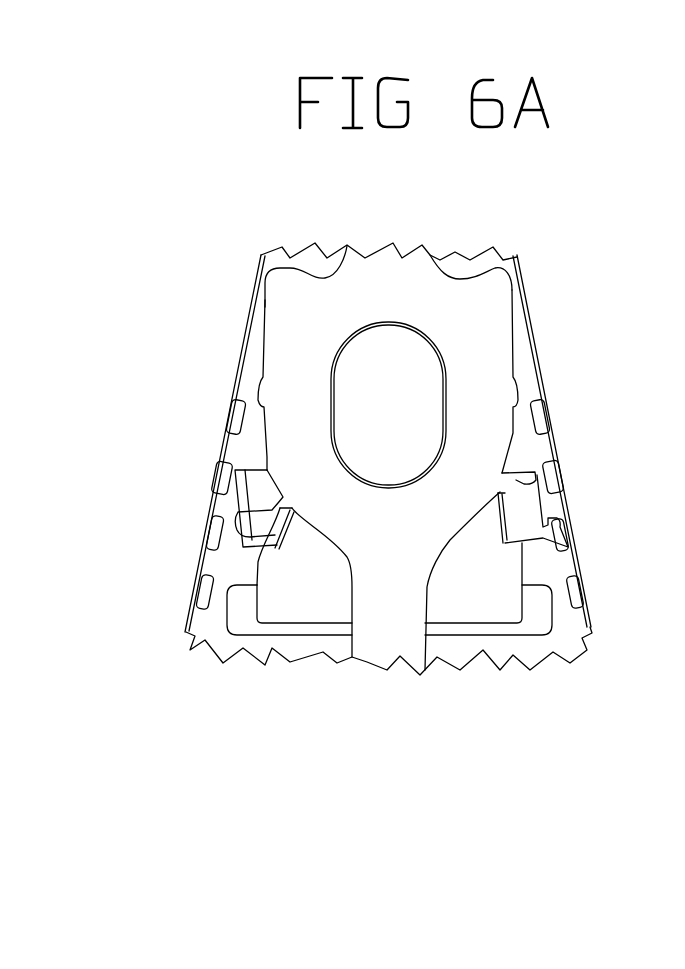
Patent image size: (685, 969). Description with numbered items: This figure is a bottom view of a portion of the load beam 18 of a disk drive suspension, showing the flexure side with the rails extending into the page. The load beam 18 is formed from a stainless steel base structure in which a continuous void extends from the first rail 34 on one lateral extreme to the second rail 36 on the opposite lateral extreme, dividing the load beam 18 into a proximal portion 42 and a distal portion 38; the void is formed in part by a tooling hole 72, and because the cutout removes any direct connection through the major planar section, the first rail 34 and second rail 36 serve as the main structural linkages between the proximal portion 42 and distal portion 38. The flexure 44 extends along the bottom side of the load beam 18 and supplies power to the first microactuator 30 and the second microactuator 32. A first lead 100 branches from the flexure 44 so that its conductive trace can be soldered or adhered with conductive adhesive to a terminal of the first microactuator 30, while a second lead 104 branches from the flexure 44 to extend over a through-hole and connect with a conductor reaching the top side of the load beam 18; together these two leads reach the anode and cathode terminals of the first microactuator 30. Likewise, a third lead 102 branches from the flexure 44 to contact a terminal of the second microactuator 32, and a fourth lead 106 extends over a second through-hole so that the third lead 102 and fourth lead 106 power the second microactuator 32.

The load beam 18 is at (507, 237).
The first microactuator 30 is at (252, 480).
The second microactuator 32 is at (525, 472).
The first rail 34 is at (235, 382).
The second rail 36 is at (538, 370).
The distal portion 38 is at (278, 260).
The proximal portion 42 is at (500, 652).
The flexure 44 is at (495, 297).
The tooling hole 72 is at (438, 362).
The first lead 100 is at (253, 523).
The third lead 102 is at (517, 493).
The second lead 104 is at (235, 608).
The fourth lead 106 is at (537, 613).